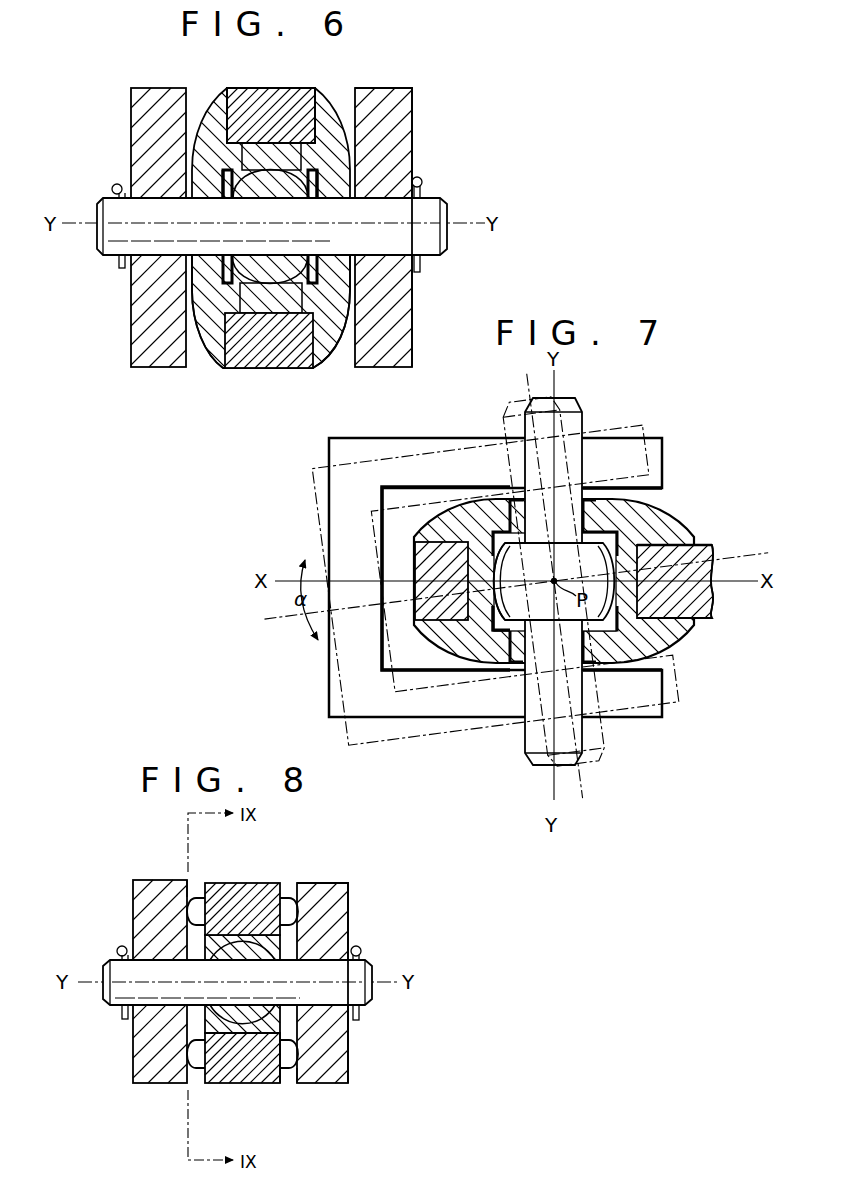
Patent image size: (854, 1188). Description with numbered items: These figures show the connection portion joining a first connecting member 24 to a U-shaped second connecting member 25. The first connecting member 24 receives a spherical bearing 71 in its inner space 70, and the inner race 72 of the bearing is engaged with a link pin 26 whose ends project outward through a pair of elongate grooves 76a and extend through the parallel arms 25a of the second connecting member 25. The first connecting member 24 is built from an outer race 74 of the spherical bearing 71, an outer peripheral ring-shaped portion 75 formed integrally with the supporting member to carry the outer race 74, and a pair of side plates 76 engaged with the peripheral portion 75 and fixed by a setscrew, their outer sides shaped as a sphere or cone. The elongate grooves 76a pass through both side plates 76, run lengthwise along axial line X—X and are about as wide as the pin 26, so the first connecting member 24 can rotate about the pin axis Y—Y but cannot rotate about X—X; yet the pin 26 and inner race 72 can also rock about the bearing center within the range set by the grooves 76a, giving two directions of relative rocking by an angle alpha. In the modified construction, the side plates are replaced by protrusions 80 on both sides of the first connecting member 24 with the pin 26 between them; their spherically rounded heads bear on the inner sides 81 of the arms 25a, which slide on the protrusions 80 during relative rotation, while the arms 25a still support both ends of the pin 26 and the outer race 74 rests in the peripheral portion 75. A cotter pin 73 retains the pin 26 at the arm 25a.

In FIG. 6, the first connecting member 24 is at (298, 96).
In FIG. 7, the first connecting member 24 is at (687, 526).
In FIG. 8, the first connecting member 24 is at (258, 881).
In FIG. 6, the second connecting member 25 is at (414, 116).
In FIG. 7, the second connecting member 25 is at (345, 752).
In FIG. 8, the second connecting member 25 is at (351, 896).
In FIG. 6, the parallel arms 25a is at (148, 102).
In FIG. 7, the parallel arms 25a is at (405, 448).
In FIG. 8, the parallel arms 25a is at (150, 905).
In FIG. 6, the link pin 26 is at (112, 257).
In FIG. 7, the link pin 26 is at (562, 766).
In FIG. 8, the link pin 26 is at (114, 1007).
In FIG. 6, the inner space 70 is at (312, 288).
In FIG. 7, the inner space 70 is at (508, 538).
In FIG. 6, the spherical bearing 71 is at (215, 157).
In FIG. 7, the spherical bearing 71 is at (625, 533).
In FIG. 8, the spherical bearing 71 is at (292, 1012).
In FIG. 6, the inner race 72 is at (240, 369).
In FIG. 7, the inner race 72 is at (555, 614).
In FIG. 8, the inner race 72 is at (246, 1085).
In FIG. 6, the cotter pin 73 is at (421, 186).
In FIG. 8, the cotter pin 73 is at (364, 955).
In FIG. 6, the outer race 74 is at (299, 369).
In FIG. 7, the outer race 74 is at (497, 663).
In FIG. 8, the outer race 74 is at (220, 1085).
In FIG. 6, the outer peripheral ring-shaped portion 75 is at (262, 98).
In FIG. 7, the outer peripheral ring-shaped portion 75 is at (715, 563).
In FIG. 8, the outer peripheral ring-shaped portion 75 is at (272, 1085).
In FIG. 6, the side plates 76 is at (343, 292).
In FIG. 7, the side plates 76 is at (447, 527).
In FIG. 6, the elongate grooves 76a is at (224, 200).
In FIG. 7, the elongate grooves 76a is at (592, 505).
In FIG. 8, the protrusions 80 is at (291, 896).
In FIG. 8, the inner sides 81 is at (188, 880).